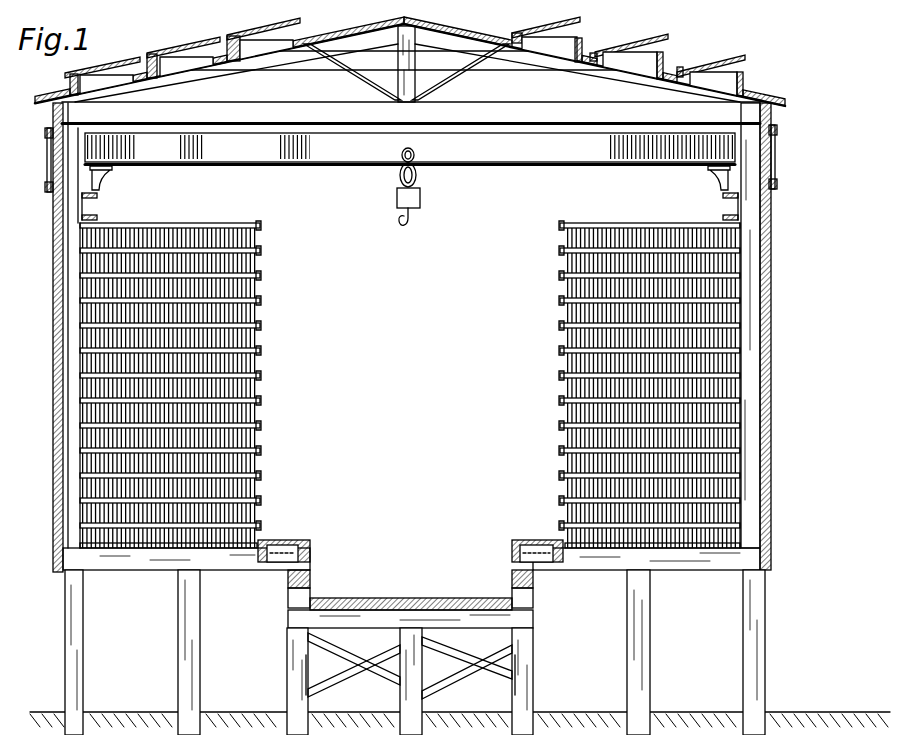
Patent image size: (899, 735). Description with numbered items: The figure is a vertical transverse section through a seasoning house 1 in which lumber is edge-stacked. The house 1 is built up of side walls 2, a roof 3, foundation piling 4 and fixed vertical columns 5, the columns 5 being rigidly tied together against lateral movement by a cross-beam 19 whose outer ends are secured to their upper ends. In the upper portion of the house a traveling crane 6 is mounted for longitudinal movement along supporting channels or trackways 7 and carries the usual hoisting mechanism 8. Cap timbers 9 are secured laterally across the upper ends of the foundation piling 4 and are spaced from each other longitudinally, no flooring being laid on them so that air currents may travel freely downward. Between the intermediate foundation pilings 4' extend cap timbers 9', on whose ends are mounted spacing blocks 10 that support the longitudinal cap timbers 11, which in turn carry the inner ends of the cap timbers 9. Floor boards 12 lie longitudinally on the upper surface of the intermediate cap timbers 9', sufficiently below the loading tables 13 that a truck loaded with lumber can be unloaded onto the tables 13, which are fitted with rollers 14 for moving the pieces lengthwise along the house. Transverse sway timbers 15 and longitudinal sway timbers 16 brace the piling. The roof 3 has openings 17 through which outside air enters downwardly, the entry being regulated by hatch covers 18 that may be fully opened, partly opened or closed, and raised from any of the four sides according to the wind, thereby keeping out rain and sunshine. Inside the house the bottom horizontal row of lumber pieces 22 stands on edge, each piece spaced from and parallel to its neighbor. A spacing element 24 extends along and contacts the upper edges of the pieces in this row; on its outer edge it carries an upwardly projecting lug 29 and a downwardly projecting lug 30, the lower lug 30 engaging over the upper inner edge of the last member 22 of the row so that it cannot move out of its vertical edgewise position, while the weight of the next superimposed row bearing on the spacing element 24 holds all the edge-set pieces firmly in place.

The seasoning house 1 is at (405, 277).
The side walls 2 is at (770, 338).
The roof 3 is at (462, 42).
The foundation piling 4 is at (426, 652).
The intermediate foundation pilings 4' is at (408, 681).
The fixed vertical columns 5 is at (67, 230).
The traveling crane 6 is at (365, 154).
The supporting channels or trackways 7 is at (85, 207).
The hoisting mechanism 8 is at (421, 197).
The cap timbers 9 is at (411, 572).
The cap timbers 9' is at (410, 630).
The spacing blocks 10 is at (290, 603).
The longitudinal cap timbers 11 is at (308, 578).
The floor boards 12 is at (410, 598).
The loading tables 13 is at (308, 543).
The rollers 14 is at (277, 556).
The transverse sway timbers 15 is at (330, 650).
The longitudinal sway timbers 16 is at (309, 668).
The openings 17 is at (253, 50).
The hatch covers 18 is at (215, 37).
The cross-beam 19 is at (470, 88).
The pieces of lumber 22 is at (258, 533).
The spacing element 24 is at (200, 227).
The upwardly projecting lug 29 is at (259, 224).
The downwardly projecting lug 30 is at (262, 233).